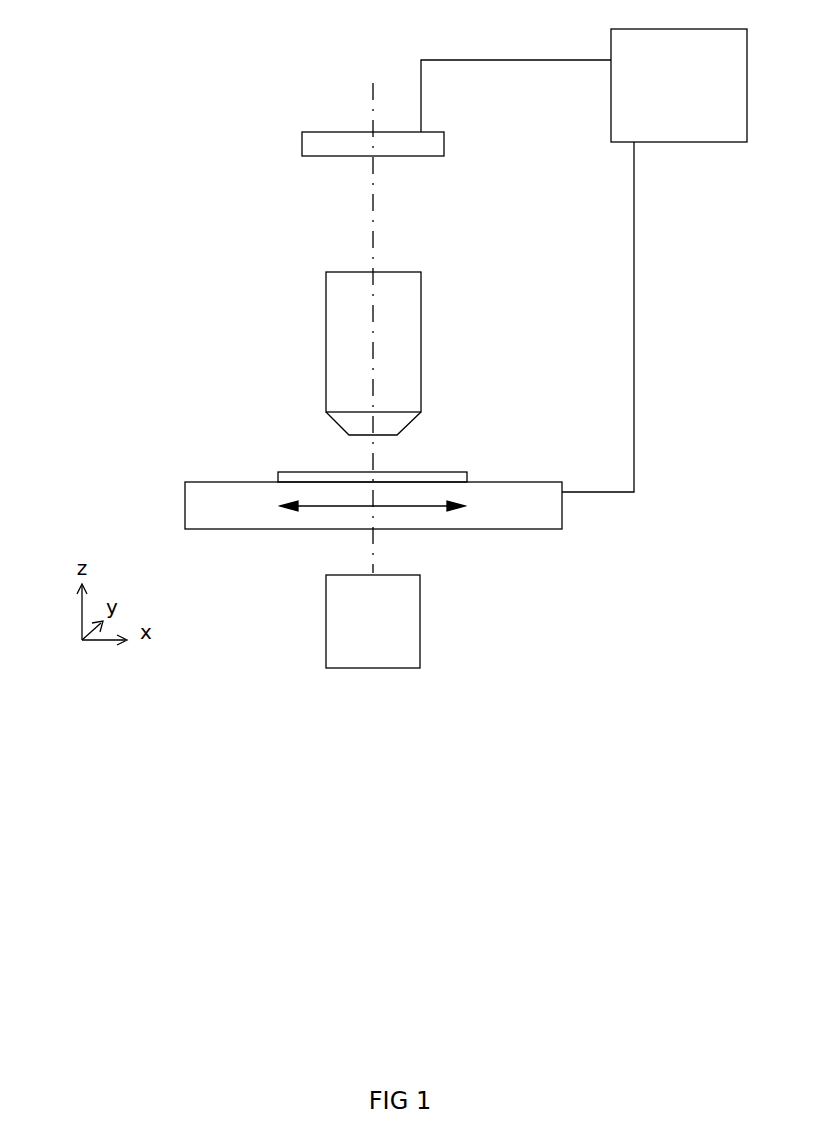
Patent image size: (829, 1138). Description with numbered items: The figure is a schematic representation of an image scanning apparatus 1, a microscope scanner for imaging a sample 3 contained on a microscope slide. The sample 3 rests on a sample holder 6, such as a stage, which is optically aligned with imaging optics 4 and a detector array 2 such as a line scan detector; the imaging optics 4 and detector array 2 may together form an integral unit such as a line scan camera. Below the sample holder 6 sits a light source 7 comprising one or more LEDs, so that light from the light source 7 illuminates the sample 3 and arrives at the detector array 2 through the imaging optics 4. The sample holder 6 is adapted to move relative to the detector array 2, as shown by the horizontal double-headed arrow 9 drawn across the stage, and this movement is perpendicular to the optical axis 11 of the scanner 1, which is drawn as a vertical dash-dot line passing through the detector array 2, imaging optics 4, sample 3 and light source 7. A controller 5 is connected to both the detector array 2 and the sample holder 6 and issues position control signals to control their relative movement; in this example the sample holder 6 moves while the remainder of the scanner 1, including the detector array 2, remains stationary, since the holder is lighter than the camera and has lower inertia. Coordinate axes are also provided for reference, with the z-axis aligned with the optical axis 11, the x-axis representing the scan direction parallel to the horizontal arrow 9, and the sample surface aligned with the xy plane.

The image scanning apparatus 1 is at (247, 175).
The detector array 2 is at (444, 148).
The sample 3 is at (467, 472).
The imaging optics 4 is at (421, 327).
The controller 5 is at (666, 88).
The sample holder 6 is at (562, 507).
The light source 7 is at (420, 615).
The stage movement direction 9 is at (385, 511).
The optical axis 11 is at (373, 203).